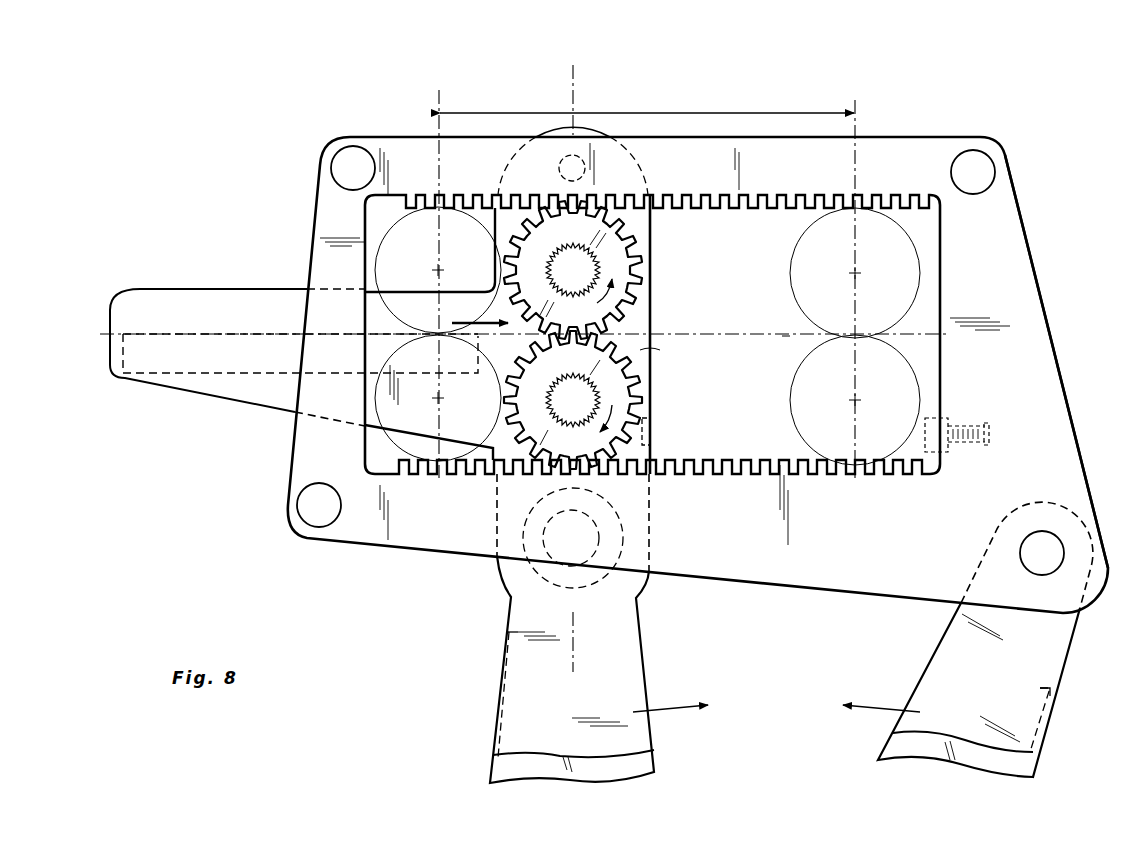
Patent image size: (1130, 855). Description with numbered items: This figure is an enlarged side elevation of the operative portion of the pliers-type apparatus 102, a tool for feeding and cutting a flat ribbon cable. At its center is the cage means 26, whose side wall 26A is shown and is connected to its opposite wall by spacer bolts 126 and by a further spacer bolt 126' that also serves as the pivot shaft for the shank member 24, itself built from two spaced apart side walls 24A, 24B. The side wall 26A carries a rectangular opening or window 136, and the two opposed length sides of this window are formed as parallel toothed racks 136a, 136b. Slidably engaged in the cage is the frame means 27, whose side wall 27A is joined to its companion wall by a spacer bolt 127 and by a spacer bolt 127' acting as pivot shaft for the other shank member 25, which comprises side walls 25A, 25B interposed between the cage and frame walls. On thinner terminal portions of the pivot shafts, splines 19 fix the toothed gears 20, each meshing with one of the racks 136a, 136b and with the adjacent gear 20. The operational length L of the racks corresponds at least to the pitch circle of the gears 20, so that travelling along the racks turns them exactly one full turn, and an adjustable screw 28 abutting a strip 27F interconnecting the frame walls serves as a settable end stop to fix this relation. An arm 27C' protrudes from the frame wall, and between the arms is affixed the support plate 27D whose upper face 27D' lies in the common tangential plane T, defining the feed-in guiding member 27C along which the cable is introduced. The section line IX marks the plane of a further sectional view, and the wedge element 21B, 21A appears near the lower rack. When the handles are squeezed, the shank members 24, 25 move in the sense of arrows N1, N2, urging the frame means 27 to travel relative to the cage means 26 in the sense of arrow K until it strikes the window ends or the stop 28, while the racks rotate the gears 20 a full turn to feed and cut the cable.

The pliers-type apparatus 102 is at (247, 156).
The spacer bolts 126 is at (636, 335).
The spacer bolt 126' is at (1033, 520).
The spacer bolt 127 is at (589, 161).
The spacer bolt 127' is at (614, 538).
The splines 19 is at (562, 260).
The toothed gears 20 is at (618, 250).
The frame means 27 is at (653, 297).
The side wall 27A is at (643, 350).
The feed-in guiding member 27C is at (226, 335).
The arm 27C' is at (354, 254).
The support plate 27D is at (300, 389).
The upper face 27D' is at (300, 289).
The strip 27F is at (652, 428).
The rectangular opening or window 136 is at (652, 334).
The toothed rack 136a is at (778, 210).
The toothed rack 136b is at (768, 462).
The wedge member 21B is at (450, 470).
The wedge member 21A is at (429, 442).
The adjustable screw 28 is at (960, 426).
The cage means 26 is at (806, 590).
The side wall 26A is at (1043, 308).
The shank member 25 is at (568, 628).
The side wall 25A is at (528, 702).
The side wall 25B is at (525, 769).
The shank member 24 is at (993, 639).
The side wall 24A is at (1050, 703).
The side wall 24B is at (1030, 762).
The arrow K is at (468, 322).
The common tangential plane T is at (785, 336).
The operational length L is at (668, 113).
The arrow N1 is at (670, 695).
The arrow N2 is at (881, 698).
The section line IX is at (535, 70).